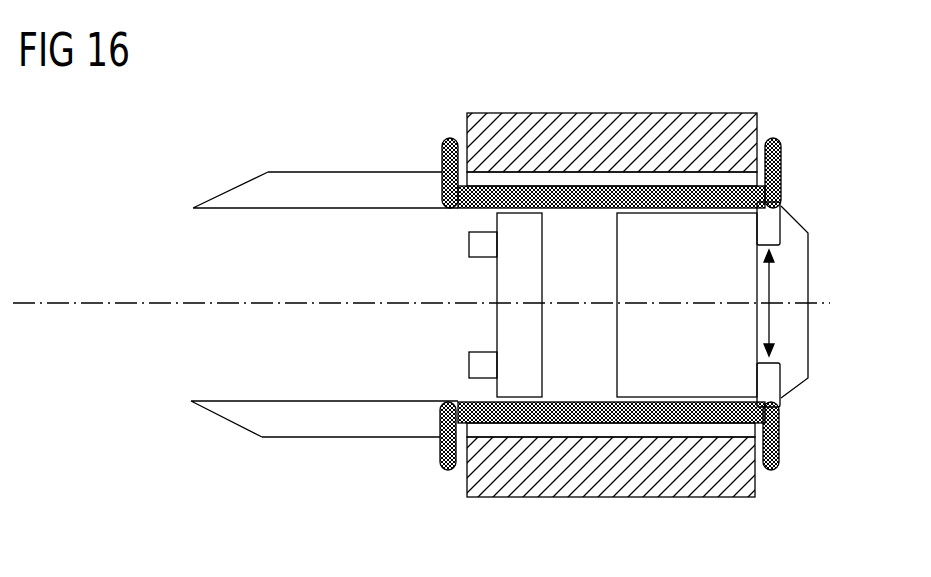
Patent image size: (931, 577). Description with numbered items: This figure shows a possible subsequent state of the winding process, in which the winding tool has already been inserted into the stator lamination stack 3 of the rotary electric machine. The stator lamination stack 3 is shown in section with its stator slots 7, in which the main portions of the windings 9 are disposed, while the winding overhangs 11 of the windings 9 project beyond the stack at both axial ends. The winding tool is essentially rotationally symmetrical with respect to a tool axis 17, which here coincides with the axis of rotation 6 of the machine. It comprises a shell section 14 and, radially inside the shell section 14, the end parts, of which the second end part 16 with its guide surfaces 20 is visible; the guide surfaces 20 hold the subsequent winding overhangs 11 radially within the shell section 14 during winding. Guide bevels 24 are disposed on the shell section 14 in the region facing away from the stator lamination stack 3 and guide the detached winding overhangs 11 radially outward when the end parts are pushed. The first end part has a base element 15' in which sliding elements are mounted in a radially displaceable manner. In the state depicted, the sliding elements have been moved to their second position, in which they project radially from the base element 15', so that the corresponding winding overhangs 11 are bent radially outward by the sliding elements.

The stator lamination stack 3 is at (654, 113).
The axis of rotation 6 is at (820, 302).
The stator slots 7 is at (714, 184).
The windings 9 is at (610, 196).
The winding overhangs 11 is at (448, 138).
The shell section 14 is at (375, 172).
The base element 15' is at (687, 388).
The second end part 16 is at (504, 322).
The tool axis 17 is at (26, 302).
The guide surfaces 20 is at (478, 245).
The guide bevels 24 is at (252, 172).